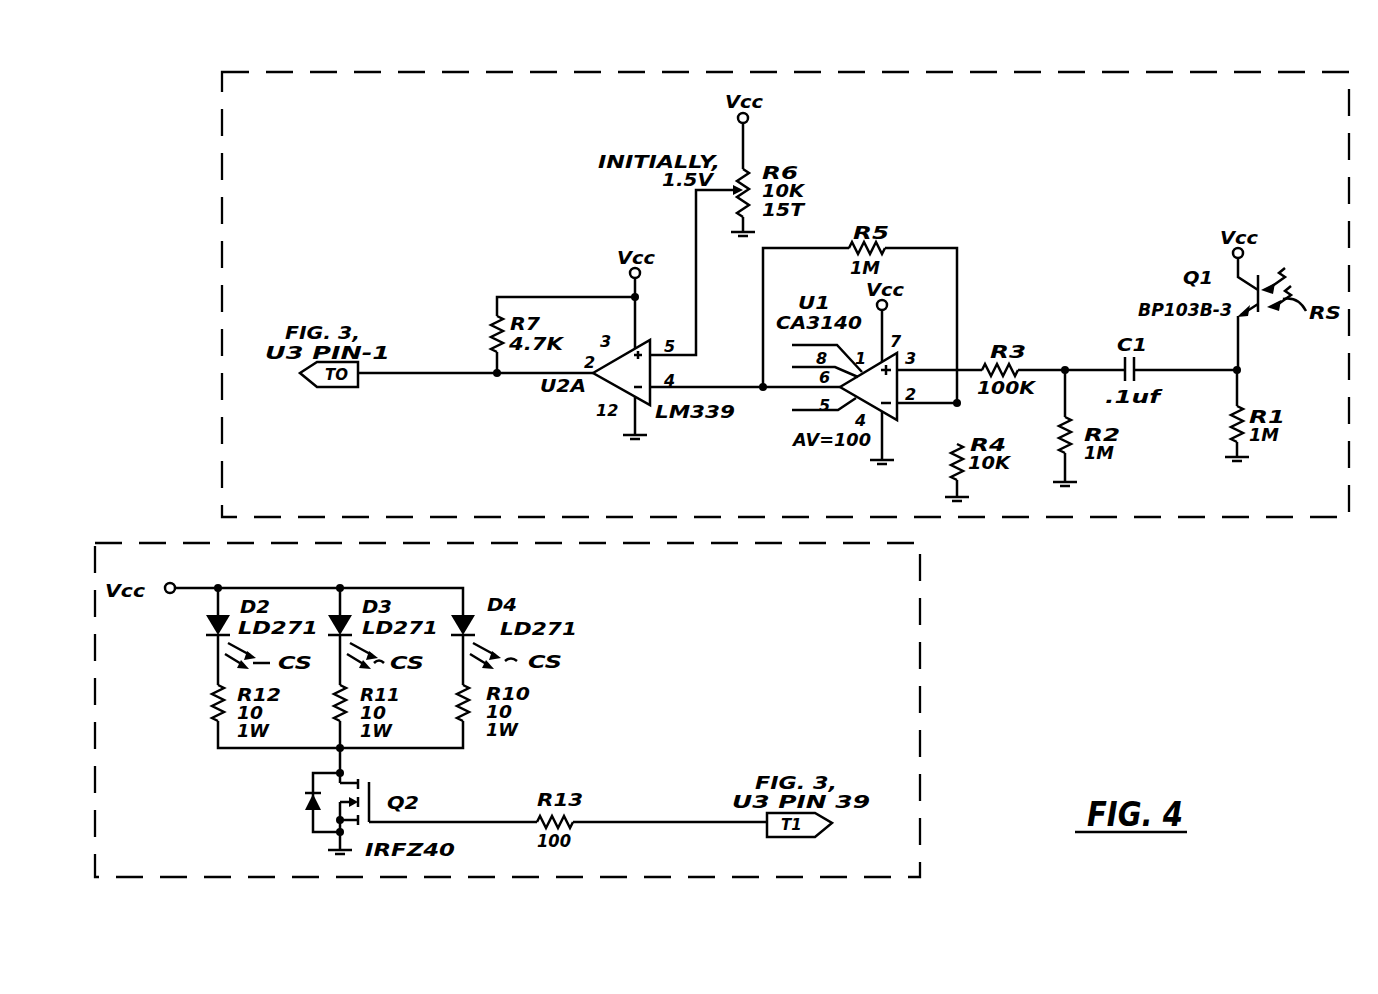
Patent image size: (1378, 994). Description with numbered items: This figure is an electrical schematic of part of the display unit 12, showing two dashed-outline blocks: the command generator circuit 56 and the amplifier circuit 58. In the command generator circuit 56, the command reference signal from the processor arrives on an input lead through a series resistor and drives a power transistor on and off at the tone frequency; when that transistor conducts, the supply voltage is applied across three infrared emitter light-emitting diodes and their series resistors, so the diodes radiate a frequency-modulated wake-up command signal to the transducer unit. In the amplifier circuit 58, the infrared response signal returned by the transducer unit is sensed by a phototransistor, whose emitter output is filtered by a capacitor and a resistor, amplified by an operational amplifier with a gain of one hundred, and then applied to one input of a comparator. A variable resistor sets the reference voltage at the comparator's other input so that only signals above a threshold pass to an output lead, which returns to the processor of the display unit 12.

The display unit 12 is at (212, 77).
The amplifier circuit 58 is at (929, 46).
The command generator circuit 56 is at (920, 690).